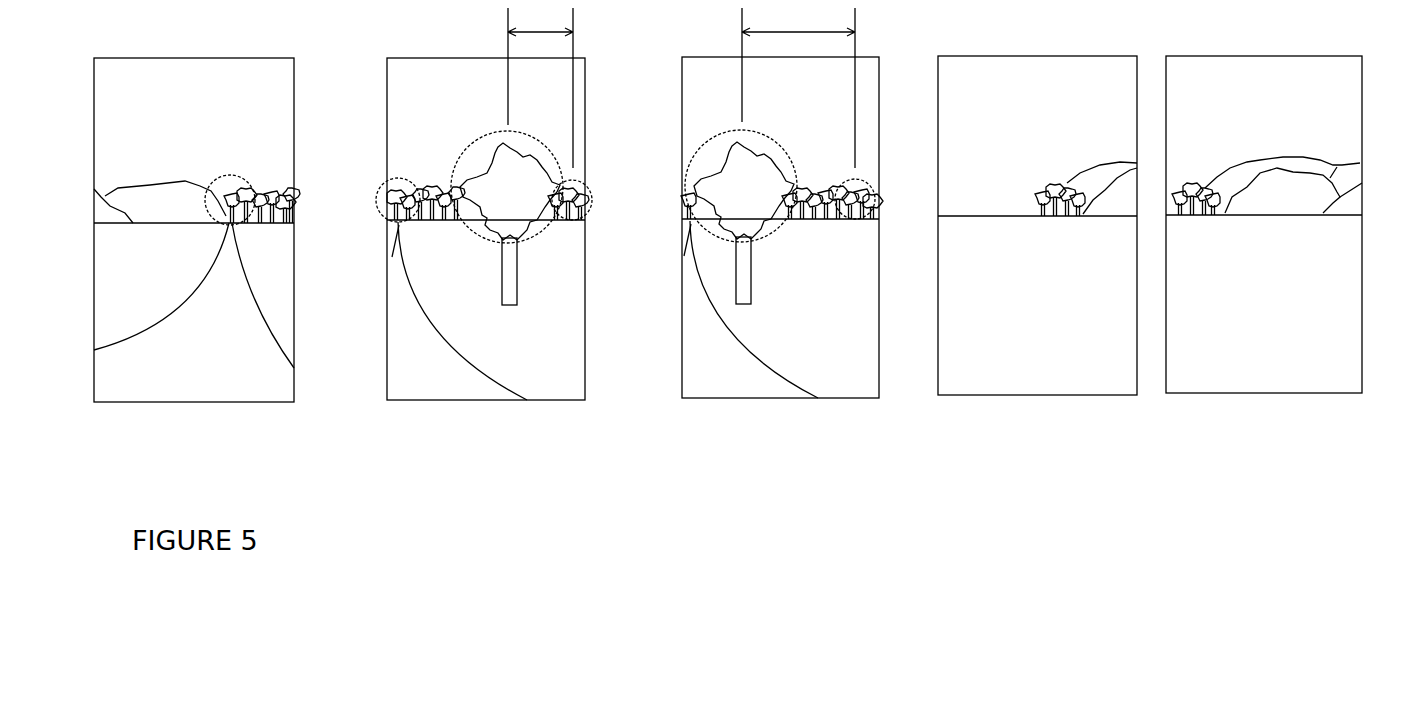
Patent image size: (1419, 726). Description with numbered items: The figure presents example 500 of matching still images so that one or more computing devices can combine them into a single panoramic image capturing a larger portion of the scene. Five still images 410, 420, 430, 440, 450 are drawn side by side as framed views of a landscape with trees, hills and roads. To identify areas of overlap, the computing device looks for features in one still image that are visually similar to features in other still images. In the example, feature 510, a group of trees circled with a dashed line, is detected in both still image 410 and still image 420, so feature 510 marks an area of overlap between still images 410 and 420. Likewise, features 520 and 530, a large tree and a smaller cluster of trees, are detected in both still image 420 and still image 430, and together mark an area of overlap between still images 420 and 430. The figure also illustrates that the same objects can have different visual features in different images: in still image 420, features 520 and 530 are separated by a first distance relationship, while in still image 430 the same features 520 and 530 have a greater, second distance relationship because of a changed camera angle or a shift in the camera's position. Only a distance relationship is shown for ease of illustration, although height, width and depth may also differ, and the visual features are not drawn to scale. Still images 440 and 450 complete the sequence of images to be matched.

The example 500 is at (202, 512).
The still image 410 is at (194, 244).
The still image 420 is at (486, 219).
The still image 430 is at (780, 218).
The fourth image frame 440 is at (1037, 242).
The fifth image frame 450 is at (1264, 242).
The feature 510 is at (380, 185).
The feature 520 is at (545, 145).
The feature 530 is at (590, 182).